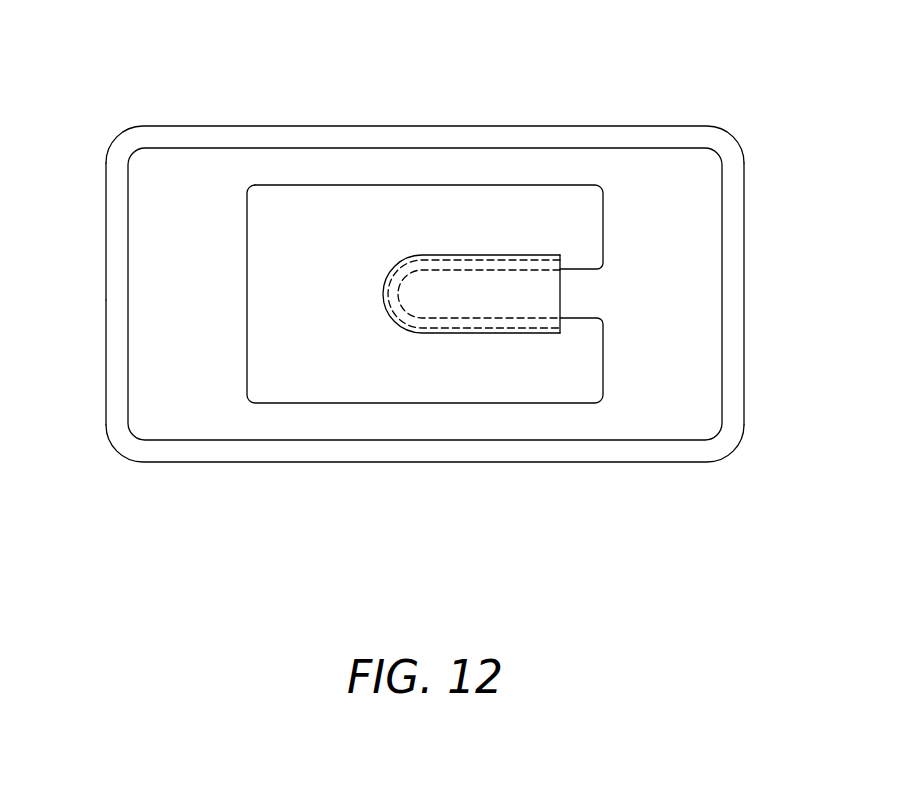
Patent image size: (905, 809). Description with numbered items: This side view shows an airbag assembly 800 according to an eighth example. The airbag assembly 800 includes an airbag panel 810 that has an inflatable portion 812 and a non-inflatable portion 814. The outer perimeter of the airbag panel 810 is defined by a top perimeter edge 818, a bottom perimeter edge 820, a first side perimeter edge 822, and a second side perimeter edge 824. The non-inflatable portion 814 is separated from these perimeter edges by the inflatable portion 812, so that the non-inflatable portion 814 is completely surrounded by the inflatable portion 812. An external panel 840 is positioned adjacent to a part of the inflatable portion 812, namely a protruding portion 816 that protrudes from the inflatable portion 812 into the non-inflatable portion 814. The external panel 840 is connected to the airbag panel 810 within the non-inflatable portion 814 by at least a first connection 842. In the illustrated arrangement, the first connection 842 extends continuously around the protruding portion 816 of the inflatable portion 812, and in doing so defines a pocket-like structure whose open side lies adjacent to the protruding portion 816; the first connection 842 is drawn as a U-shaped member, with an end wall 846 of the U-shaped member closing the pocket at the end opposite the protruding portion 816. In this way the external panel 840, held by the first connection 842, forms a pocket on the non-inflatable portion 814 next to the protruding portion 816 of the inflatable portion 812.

The airbag assembly 800 is at (118, 38).
The airbag panel 810 is at (106, 203).
The inflatable portion 812 is at (140, 253).
The non-inflatable portion 814 is at (375, 294).
The protruding portion 816 is at (482, 270).
The top perimeter edge 818 is at (648, 126).
The bottom perimeter edge 820 is at (182, 462).
The first side perimeter edge 822 is at (106, 353).
The second side perimeter edge 824 is at (744, 201).
The external panel 840 is at (392, 272).
The first connection 842 is at (473, 328).
The end wall of U-shaped member 846 is at (560, 293).